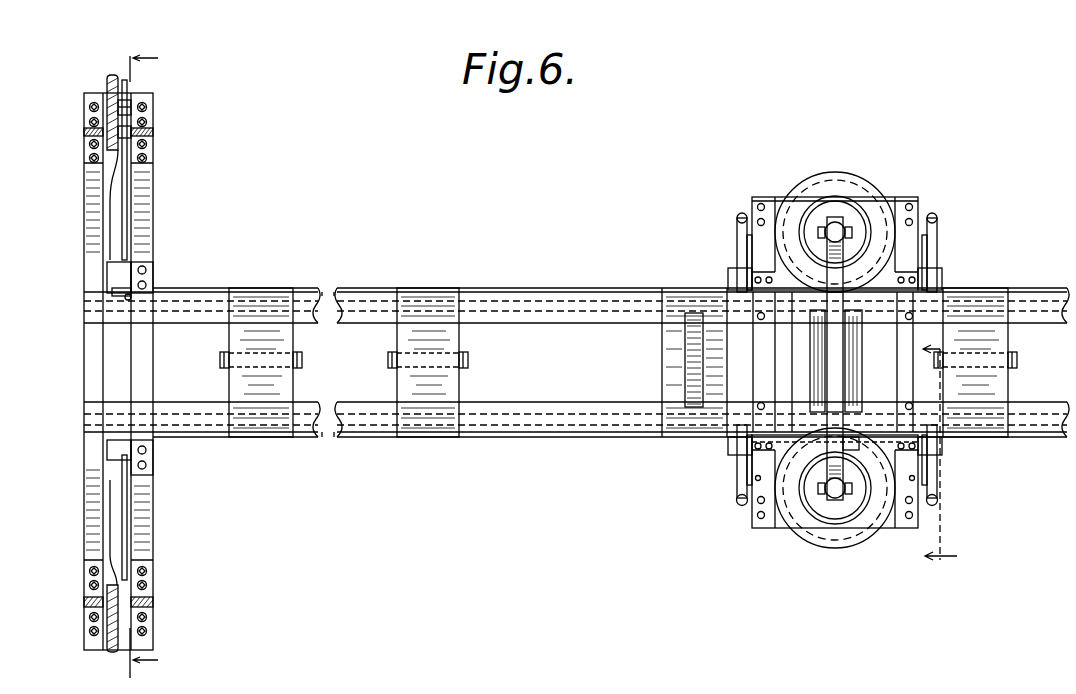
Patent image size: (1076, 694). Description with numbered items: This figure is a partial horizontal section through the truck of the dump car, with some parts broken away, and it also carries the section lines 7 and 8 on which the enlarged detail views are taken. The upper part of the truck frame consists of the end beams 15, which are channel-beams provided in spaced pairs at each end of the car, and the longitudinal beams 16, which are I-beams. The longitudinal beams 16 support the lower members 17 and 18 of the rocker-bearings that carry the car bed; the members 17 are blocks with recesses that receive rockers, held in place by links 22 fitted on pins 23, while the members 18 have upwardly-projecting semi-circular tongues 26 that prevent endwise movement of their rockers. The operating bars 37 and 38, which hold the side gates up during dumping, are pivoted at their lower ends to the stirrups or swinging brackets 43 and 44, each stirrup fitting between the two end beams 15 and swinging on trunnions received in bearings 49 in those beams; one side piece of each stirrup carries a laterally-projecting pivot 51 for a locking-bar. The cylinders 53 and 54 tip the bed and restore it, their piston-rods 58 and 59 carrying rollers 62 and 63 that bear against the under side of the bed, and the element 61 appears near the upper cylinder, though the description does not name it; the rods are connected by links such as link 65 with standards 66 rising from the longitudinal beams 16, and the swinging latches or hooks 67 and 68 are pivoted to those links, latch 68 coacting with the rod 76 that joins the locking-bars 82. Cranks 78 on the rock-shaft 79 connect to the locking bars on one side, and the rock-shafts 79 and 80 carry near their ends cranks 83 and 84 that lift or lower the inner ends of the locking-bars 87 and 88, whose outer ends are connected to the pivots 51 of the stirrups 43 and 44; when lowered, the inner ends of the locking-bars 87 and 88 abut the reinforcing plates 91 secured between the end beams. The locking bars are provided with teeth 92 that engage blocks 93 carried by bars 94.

The section line 7— 7 is at (939, 456).
The section line 8— 8 is at (139, 363).
The end beams 15 is at (148, 241).
The longitudinal beams 16 is at (575, 318).
The lower members of rocker-bearings 17 is at (265, 338).
The lower members of second set of bearings 18 is at (662, 338).
The links 22 is at (400, 372).
The pins 23 is at (300, 366).
The semi-circular tongues 26 is at (693, 345).
The operating bars 37 is at (115, 176).
The operating bars 38 is at (112, 554).
The stirrups or swinging brackets 43 is at (110, 92).
The stirrups or swinging brackets 44 is at (115, 647).
The bearings 49 is at (151, 132).
The laterally-projecting pivot 51 is at (131, 108).
The cylinder 53 is at (872, 188).
The cylinder 54 is at (870, 538).
The piston-rod 58 is at (823, 228).
The piston-rod 59 is at (848, 500).
The bearing 61 is at (829, 256).
The roller 62 is at (836, 218).
The roller 63 is at (838, 500).
The link 65 is at (857, 450).
The standards 66 is at (855, 391).
The swinging latch or hook 67 is at (858, 293).
The swinging latch or hook 68 is at (775, 492).
The rod 76 is at (784, 428).
The cranks 78 is at (738, 230).
The rock-shaft 79 is at (337, 292).
The rock-shaft 80 is at (345, 443).
The locking-bars 82 is at (753, 452).
The crank 83 is at (125, 289).
The crank 84 is at (740, 498).
The locking-bar 87 is at (126, 184).
The locking-bar 88 is at (126, 510).
The reinforcing plates 91 is at (122, 280).
The projections or teeth 92 is at (737, 257).
The blocks 93 is at (730, 278).
The bars 94 is at (758, 478).